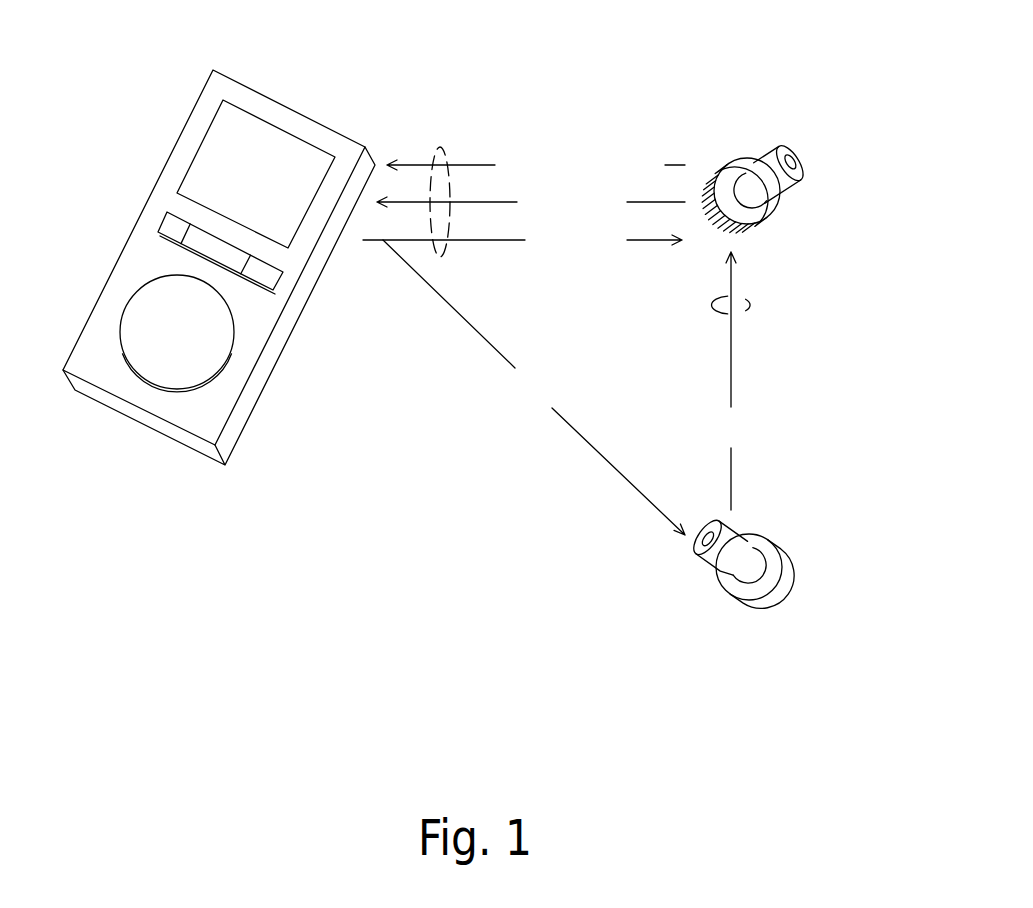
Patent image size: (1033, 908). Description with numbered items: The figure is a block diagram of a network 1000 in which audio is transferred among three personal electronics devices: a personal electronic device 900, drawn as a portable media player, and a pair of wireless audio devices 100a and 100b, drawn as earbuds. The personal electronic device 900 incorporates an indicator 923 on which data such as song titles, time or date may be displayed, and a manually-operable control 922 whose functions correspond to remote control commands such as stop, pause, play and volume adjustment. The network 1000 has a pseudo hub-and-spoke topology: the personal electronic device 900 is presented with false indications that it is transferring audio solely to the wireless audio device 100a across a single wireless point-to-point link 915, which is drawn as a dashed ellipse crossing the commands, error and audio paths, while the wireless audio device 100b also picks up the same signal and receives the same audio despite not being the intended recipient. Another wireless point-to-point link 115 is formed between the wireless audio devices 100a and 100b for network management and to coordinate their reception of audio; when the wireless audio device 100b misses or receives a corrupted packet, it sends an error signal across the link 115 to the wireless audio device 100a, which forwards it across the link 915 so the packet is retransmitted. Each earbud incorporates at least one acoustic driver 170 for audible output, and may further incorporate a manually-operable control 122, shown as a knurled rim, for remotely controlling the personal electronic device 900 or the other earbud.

The network 1000 is at (213, 635).
The personal electronic device 900 is at (218, 261).
The indicator 923 is at (252, 138).
The manually-operable control 922 is at (177, 232).
The wireless point-to-point link 915 is at (440, 147).
The wireless audio device 100a is at (688, 136).
The wireless audio device 100b is at (778, 587).
The manually-operable control 122 is at (702, 175).
The acoustic driver 170 is at (808, 155).
The wireless point-to-point link 115 is at (750, 303).